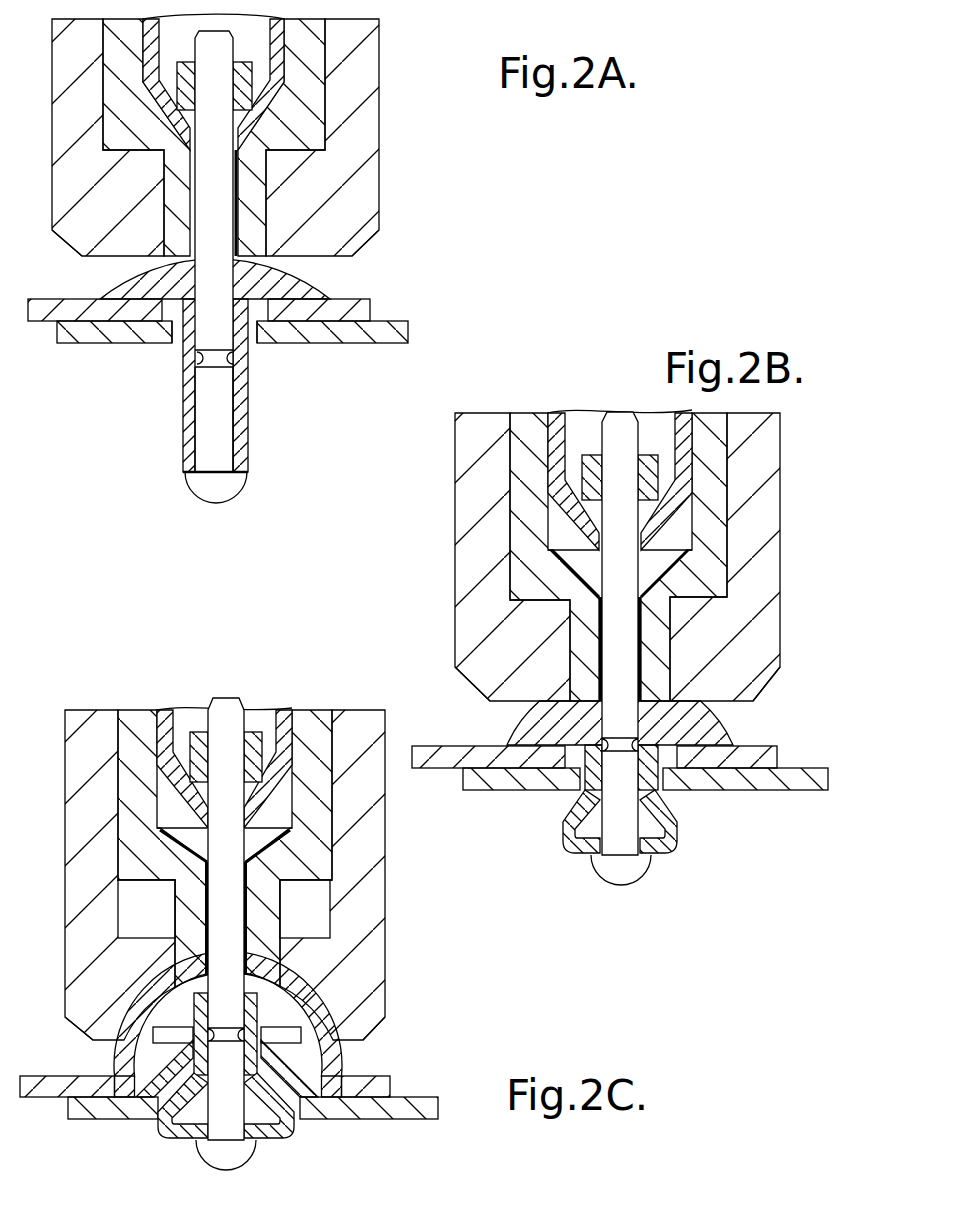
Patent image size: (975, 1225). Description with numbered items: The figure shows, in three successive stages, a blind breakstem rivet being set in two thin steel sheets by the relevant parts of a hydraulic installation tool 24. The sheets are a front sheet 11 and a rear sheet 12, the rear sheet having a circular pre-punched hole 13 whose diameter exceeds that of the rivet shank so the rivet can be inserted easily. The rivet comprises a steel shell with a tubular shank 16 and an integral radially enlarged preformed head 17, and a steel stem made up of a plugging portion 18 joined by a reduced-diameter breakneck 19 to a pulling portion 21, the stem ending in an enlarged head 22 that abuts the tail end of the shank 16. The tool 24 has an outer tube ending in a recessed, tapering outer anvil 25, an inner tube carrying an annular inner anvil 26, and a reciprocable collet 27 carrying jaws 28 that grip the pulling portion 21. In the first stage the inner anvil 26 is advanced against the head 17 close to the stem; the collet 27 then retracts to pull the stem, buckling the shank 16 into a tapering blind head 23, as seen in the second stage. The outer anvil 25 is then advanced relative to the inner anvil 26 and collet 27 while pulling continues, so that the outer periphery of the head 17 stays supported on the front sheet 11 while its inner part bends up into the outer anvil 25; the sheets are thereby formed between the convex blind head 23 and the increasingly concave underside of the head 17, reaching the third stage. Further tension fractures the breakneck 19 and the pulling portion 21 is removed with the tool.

In FIG. 2A, the front sheet 11 is at (360, 308).
In FIG. 2B, the front sheet 11 is at (760, 748).
In FIG. 2C, the front sheet 11 is at (377, 1082).
In FIG. 2A, the rear sheet 12 is at (403, 333).
In FIG. 2B, the rear sheet 12 is at (813, 785).
In FIG. 2C, the rear sheet 12 is at (420, 1106).
In FIG. 2A, the pre-punched hole 13 is at (253, 337).
In FIG. 2A, the tubular shank 16 is at (240, 432).
In FIG. 2B, the tubular shank 16 is at (621, 767).
In FIG. 2C, the tubular shank 16 is at (225, 1034).
In FIG. 2A, the preformed head 17 is at (310, 288).
In FIG. 2B, the preformed head 17 is at (532, 730).
In FIG. 2C, the preformed head 17 is at (157, 1013).
In FIG. 2A, the plugging portion 18 is at (212, 404).
In FIG. 2A, the breakneck 19 is at (200, 357).
In FIG. 2A, the pulling portion 21 is at (222, 152).
In FIG. 2A, the enlarged head 22 is at (198, 478).
In FIG. 2B, the enlarged head 22 is at (633, 873).
In FIG. 2C, the enlarged head 22 is at (212, 1155).
In FIG. 2B, the blind head 23 is at (677, 832).
In FIG. 2C, the blind head 23 is at (287, 1123).
In FIG. 2A, the rivet installation tool 24 is at (400, 172).
In FIG. 2B, the rivet installation tool 24 is at (452, 563).
In FIG. 2C, the rivet installation tool 24 is at (398, 968).
In FIG. 2A, the outer anvil 25 is at (318, 242).
In FIG. 2B, the outer anvil 25 is at (718, 687).
In FIG. 2C, the outer anvil 25 is at (327, 1022).
In FIG. 2A, the inner anvil 26 is at (242, 250).
In FIG. 2B, the inner anvil 26 is at (648, 697).
In FIG. 2C, the inner anvil 26 is at (263, 978).
In FIG. 2A, the collet 27 is at (280, 90).
In FIG. 2B, the collet 27 is at (556, 468).
In FIG. 2C, the collet 27 is at (224, 769).
In FIG. 2A, the jaws 28 is at (250, 75).
In FIG. 2B, the jaws 28 is at (592, 497).
In FIG. 2C, the jaws 28 is at (226, 757).